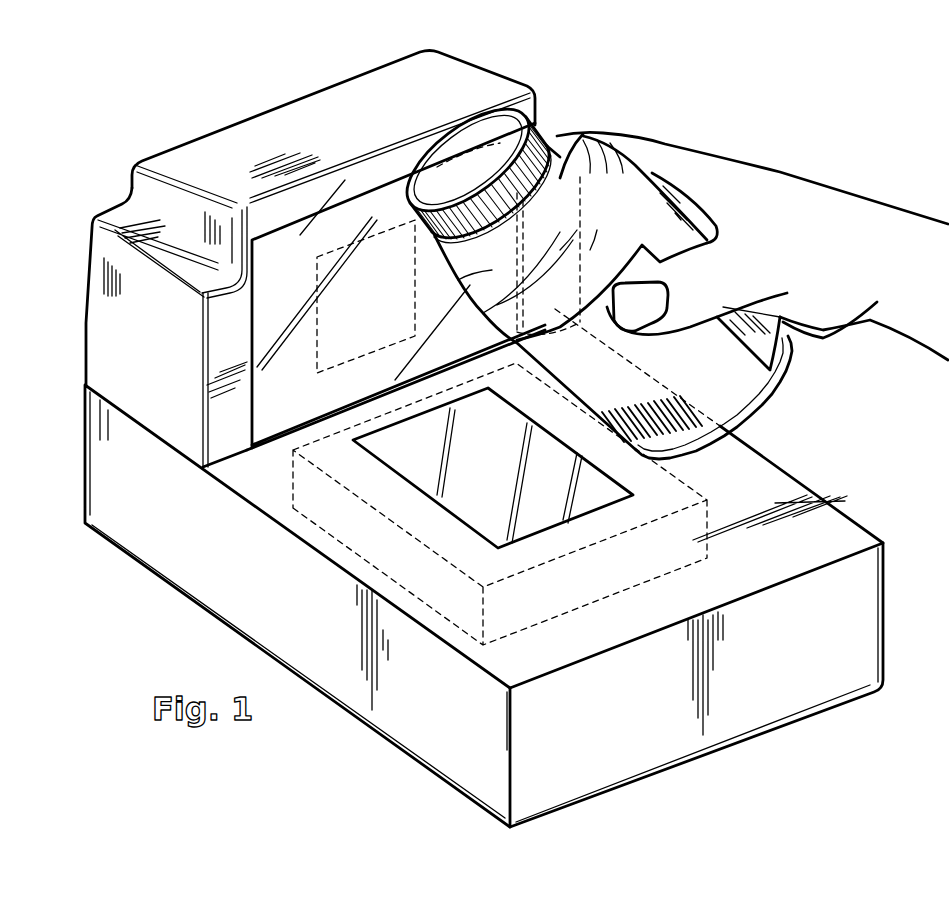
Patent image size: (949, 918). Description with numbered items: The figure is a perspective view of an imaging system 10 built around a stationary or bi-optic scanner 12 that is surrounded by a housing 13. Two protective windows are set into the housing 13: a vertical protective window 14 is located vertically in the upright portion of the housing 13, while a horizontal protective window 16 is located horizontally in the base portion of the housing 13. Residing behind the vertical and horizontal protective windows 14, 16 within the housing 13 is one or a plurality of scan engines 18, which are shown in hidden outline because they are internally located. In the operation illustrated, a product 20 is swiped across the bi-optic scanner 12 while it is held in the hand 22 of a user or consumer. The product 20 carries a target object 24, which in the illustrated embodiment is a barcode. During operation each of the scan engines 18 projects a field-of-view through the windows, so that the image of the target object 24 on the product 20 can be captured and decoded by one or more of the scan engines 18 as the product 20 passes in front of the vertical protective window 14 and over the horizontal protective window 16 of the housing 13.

The imaging system 10 is at (241, 94).
The bi-optic scanner 12 is at (652, 98).
The housing 13 is at (850, 540).
The vertical protective window 14 is at (295, 277).
The horizontal protective window 16 is at (426, 456).
The scan engines 18 is at (336, 250).
The product 20 is at (598, 273).
The hand 22 is at (860, 228).
The target object 24 is at (625, 418).